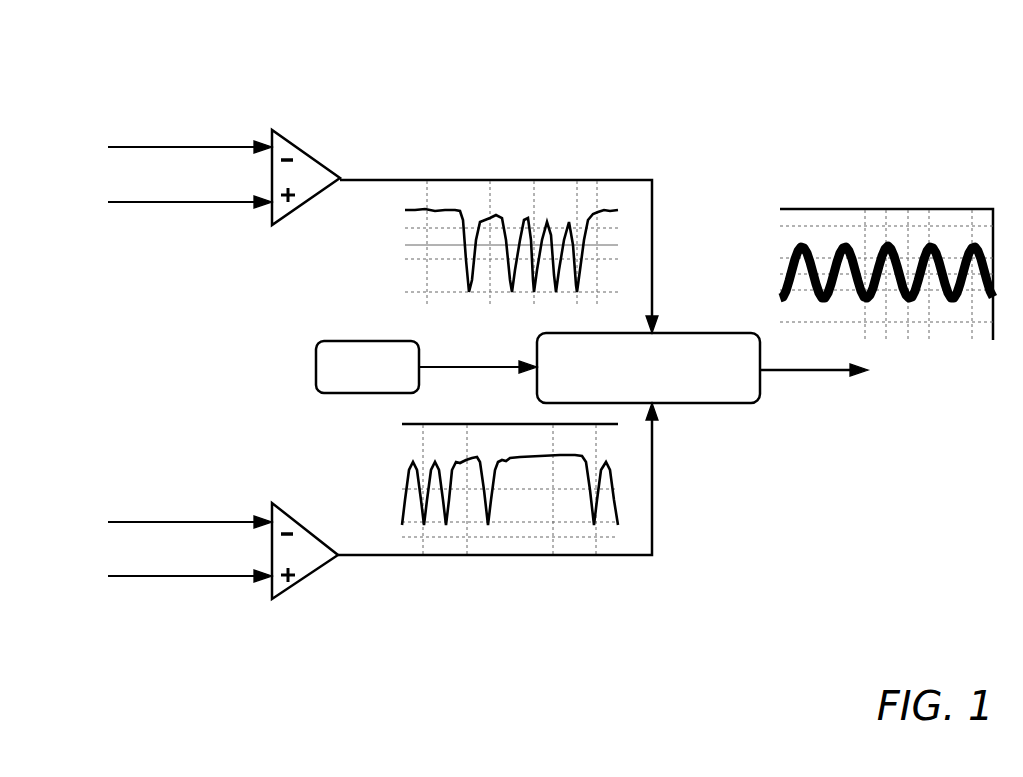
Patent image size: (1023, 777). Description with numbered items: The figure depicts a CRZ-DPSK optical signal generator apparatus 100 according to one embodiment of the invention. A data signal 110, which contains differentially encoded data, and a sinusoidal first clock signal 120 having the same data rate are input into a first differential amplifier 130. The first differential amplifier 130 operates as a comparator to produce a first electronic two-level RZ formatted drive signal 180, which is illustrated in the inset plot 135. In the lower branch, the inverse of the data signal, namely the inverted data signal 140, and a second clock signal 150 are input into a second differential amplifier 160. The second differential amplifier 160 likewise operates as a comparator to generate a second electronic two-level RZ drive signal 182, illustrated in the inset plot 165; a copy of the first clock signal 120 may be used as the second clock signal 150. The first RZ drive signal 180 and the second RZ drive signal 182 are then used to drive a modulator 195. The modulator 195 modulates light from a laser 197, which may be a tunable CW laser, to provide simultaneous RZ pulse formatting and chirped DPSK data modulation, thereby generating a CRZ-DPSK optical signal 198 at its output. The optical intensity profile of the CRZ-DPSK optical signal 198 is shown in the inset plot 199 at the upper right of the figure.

The CRZ-DPSK optical signal generator apparatus 100 is at (681, 61).
The data signal 110 is at (162, 110).
The first clock signal 120 is at (143, 178).
The differential amplifier (DA #1) 130 is at (303, 207).
The inset plot 135 is at (398, 290).
The inverted data signal 140 is at (128, 492).
The second clock signal 150 is at (138, 556).
The second differential amplifier (DA #2) 160 is at (303, 581).
The inset plot 165 is at (394, 434).
The first RZ drive signal 180 is at (520, 178).
The second RZ drive signal 182 is at (535, 557).
The modulator 195 is at (697, 332).
The laser 197 is at (316, 354).
The CRZ-DPSK optical signal 198 is at (812, 372).
The plot 199 is at (880, 208).